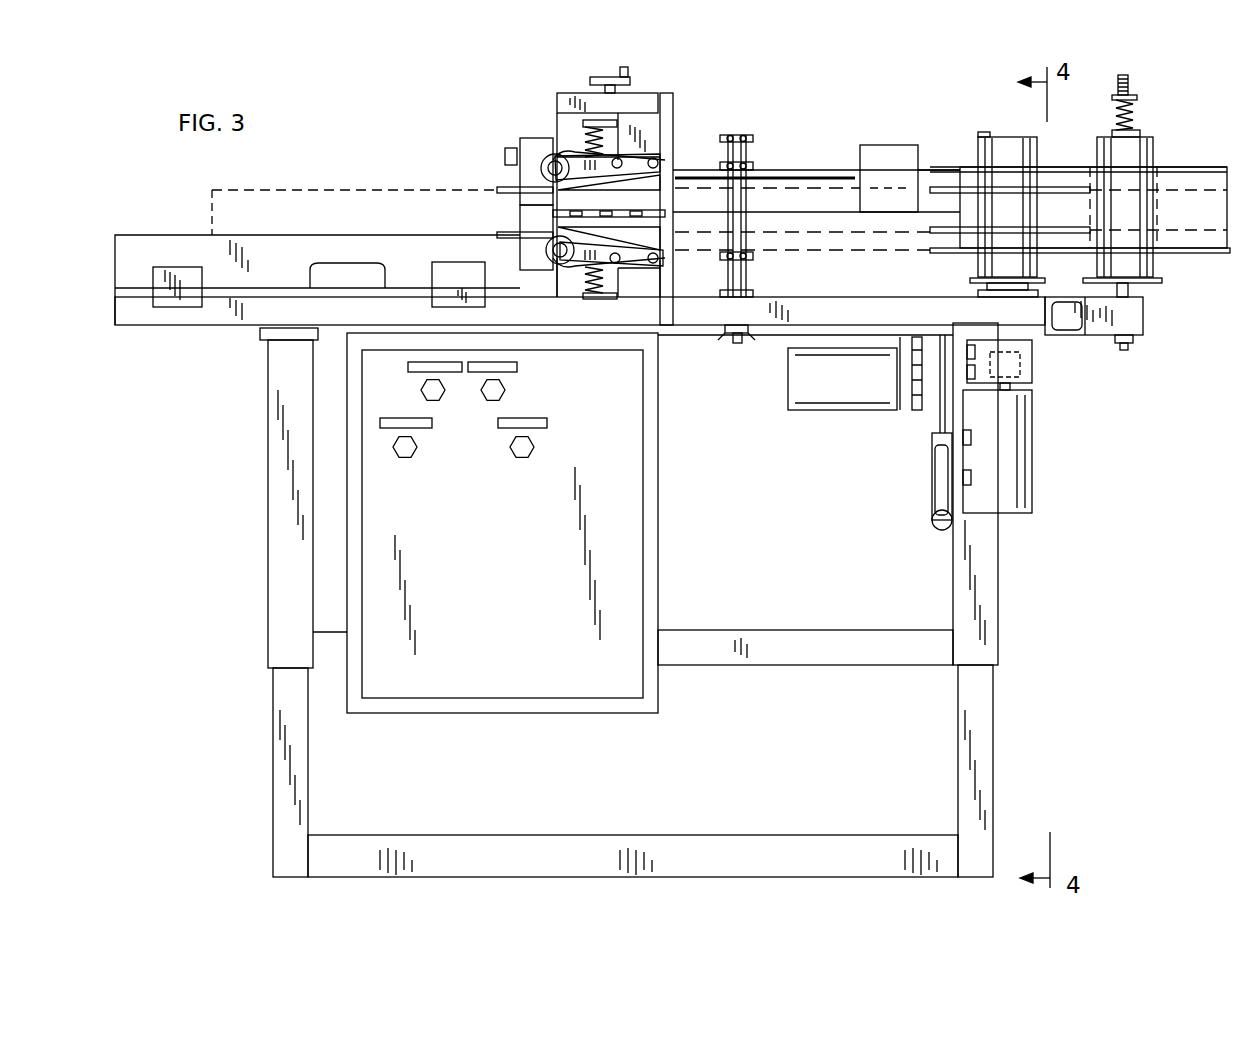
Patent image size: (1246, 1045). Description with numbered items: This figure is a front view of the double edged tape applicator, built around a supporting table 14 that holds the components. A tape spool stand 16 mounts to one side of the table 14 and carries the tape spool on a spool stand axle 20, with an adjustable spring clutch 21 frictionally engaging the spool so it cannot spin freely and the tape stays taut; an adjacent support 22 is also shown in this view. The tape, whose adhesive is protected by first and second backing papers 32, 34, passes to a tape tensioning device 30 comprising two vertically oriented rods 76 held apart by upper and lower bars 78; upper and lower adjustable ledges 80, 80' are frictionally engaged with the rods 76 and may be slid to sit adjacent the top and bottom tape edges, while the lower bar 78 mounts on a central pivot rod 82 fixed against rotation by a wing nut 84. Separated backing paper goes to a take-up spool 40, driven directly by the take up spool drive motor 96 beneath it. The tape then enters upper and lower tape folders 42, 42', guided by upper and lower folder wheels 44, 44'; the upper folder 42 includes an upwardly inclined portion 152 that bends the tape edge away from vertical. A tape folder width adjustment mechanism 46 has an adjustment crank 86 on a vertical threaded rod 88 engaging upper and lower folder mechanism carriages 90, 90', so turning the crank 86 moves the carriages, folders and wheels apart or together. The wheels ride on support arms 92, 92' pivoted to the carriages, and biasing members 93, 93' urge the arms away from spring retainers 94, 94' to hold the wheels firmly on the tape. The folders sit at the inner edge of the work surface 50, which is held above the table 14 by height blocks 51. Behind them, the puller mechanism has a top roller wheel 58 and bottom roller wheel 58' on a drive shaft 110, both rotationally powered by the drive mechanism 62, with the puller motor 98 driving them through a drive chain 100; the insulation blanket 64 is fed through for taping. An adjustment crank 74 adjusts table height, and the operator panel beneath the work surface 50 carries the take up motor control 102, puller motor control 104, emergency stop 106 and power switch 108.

The supporting table 14 is at (998, 585).
The tape spool stand 16 is at (1143, 315).
The spool stand axle 20 is at (1133, 85).
The adjustable spring clutch 21 is at (1137, 115).
The support cylinder 22 is at (1176, 268).
The tape tensioning device 30 is at (741, 125).
The first backing paper 32 is at (897, 170).
The second backing paper 34 is at (868, 250).
The backing paper take-up spool 40 is at (1045, 165).
The upper tape folder 42 is at (487, 171).
The lower tape folder 42' is at (476, 221).
The upper folder wheel 44 is at (558, 141).
The lower folder wheel 44' is at (554, 274).
The tape folder width adjustment mechanism 46 is at (613, 73).
The work surface 50 is at (120, 235).
The height blocks 51 is at (178, 292).
The top roller wheel 58 is at (514, 152).
The bottom roller wheel 58' is at (473, 238).
The drive mechanism 62 is at (890, 145).
The insulation blanket 64 is at (348, 190).
The adjustment crank 74 is at (935, 510).
The vertically oriented rods 76 is at (724, 143).
The upper and lower bars 78 is at (755, 138).
The upper adjustable ledge 80 is at (770, 154).
The lower adjustable ledge 80' is at (776, 270).
The central pivot rod 82 is at (738, 345).
The wing nut 84 is at (752, 337).
The adjustment crank 86 is at (640, 93).
The threaded rod 88 is at (657, 380).
The upper folder mechanism carriage 90 is at (696, 206).
The lower folder mechanism carriage 90' is at (658, 311).
The upper wheel support arm 92 is at (540, 119).
The lower wheel support arm 92' is at (549, 305).
The biasing member 93 is at (607, 111).
The biasing member 93' is at (608, 316).
The spring retainer 94 is at (632, 111).
The spring retainer 94' is at (593, 328).
The take up spool drive motor 96 is at (1035, 440).
The puller motor 98 is at (833, 408).
The drive chain 100 is at (918, 412).
The take up motor control 102 is at (435, 400).
The puller motor control 104 is at (492, 400).
The emergency stop 106 is at (522, 458).
The power switch 108 is at (405, 458).
The upper drive shaft 110 is at (828, 170).
The upwardly inclined portion 152 is at (575, 183).